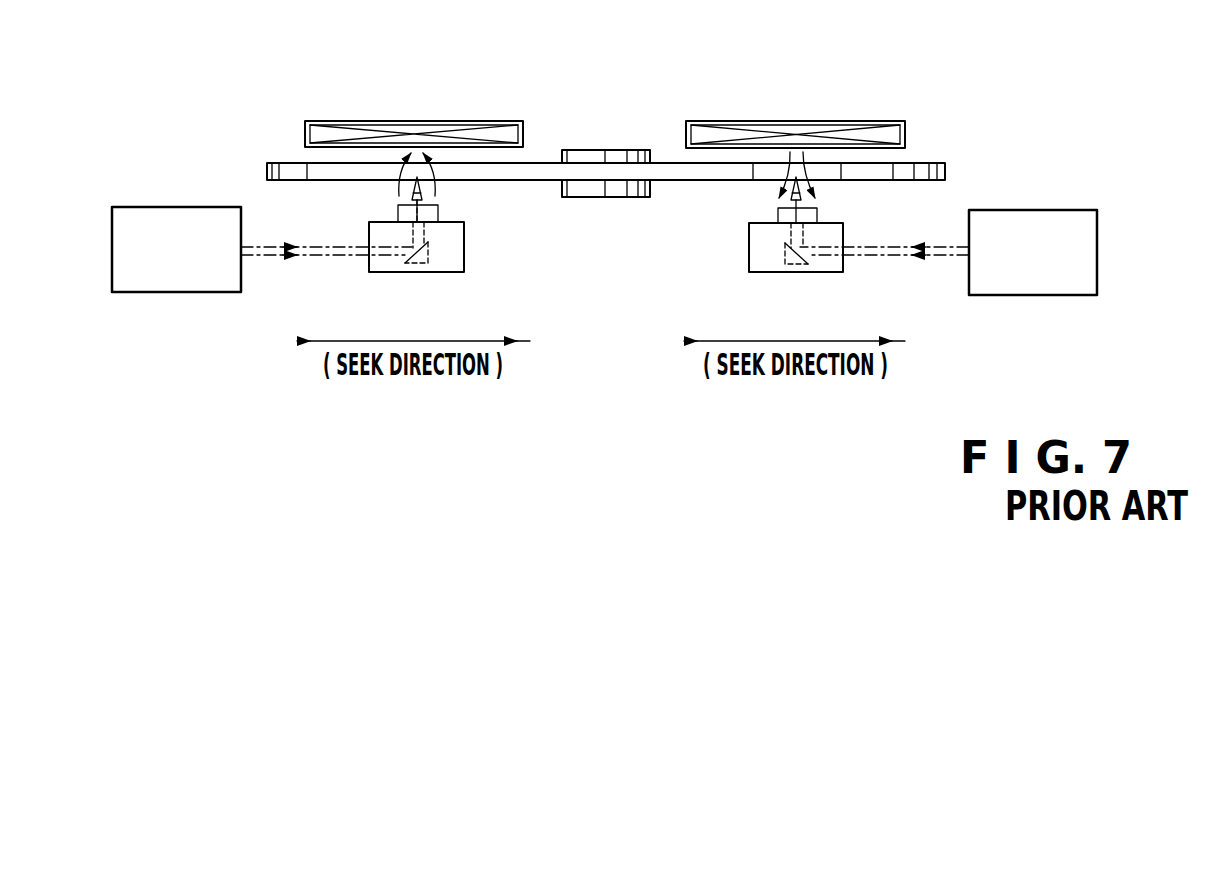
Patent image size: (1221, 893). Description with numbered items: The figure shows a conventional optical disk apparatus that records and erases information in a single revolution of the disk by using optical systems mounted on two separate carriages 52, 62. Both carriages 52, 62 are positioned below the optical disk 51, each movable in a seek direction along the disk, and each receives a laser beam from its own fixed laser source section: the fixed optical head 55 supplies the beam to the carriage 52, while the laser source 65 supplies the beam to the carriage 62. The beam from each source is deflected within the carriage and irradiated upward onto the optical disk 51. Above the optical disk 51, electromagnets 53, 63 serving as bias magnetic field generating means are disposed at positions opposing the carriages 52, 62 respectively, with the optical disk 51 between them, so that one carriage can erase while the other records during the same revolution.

The optical disk 51 is at (534, 168).
The carriage 52 is at (748, 247).
The electromagnet 53 is at (853, 121).
The fixed optical head (laser source section) 55 is at (1076, 210).
The carriage 62 is at (464, 247).
The electromagnet 63 is at (378, 120).
The laser source 65 is at (218, 207).